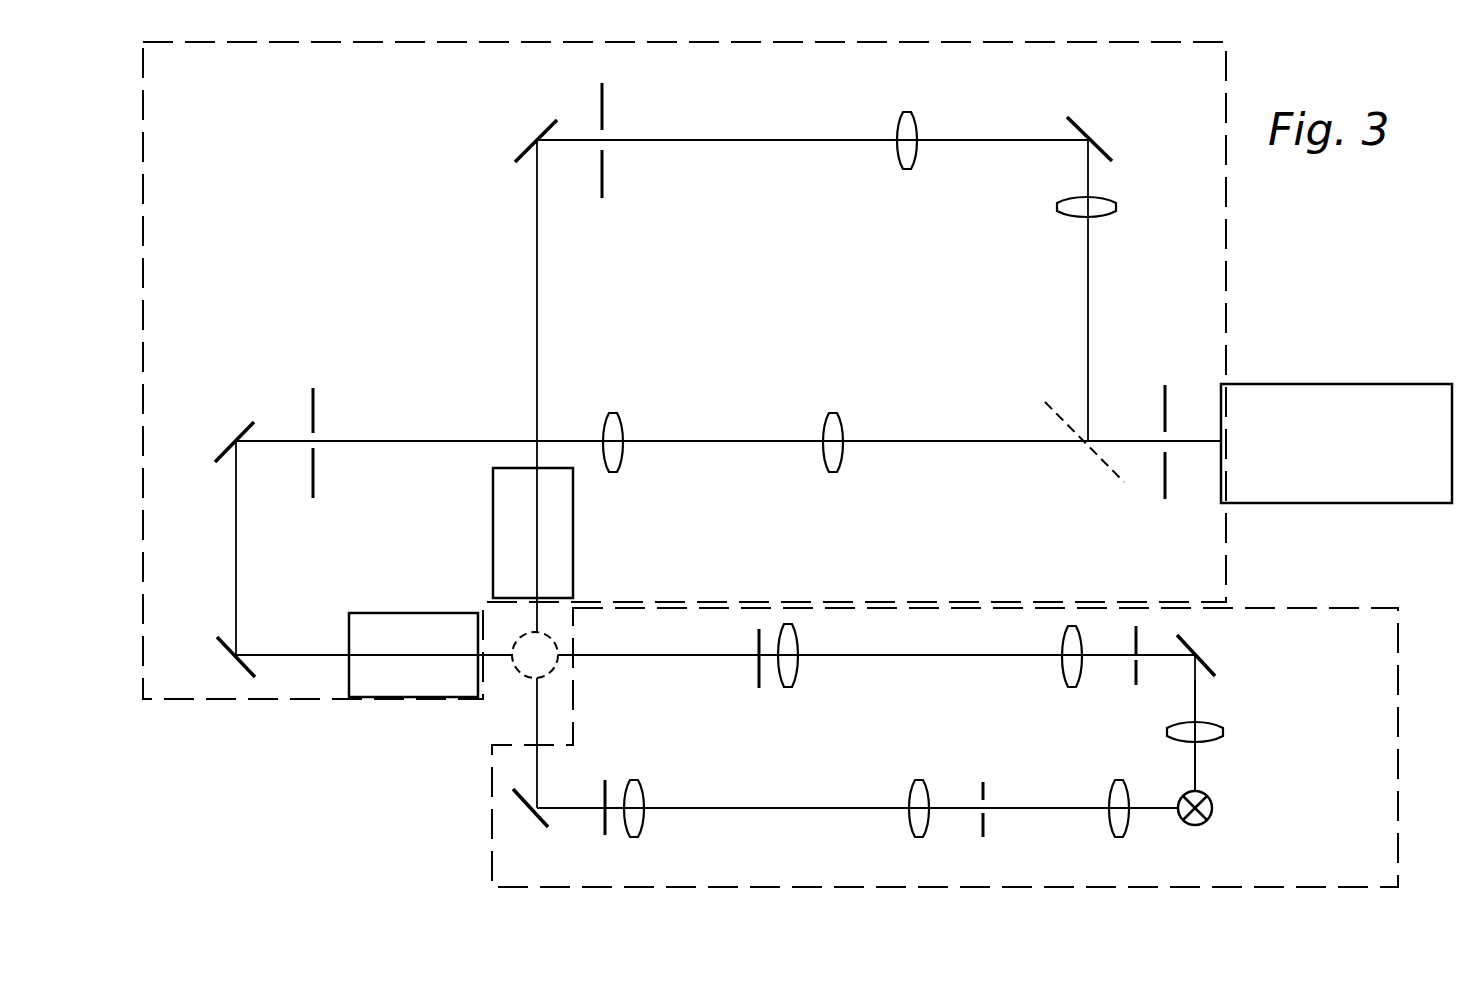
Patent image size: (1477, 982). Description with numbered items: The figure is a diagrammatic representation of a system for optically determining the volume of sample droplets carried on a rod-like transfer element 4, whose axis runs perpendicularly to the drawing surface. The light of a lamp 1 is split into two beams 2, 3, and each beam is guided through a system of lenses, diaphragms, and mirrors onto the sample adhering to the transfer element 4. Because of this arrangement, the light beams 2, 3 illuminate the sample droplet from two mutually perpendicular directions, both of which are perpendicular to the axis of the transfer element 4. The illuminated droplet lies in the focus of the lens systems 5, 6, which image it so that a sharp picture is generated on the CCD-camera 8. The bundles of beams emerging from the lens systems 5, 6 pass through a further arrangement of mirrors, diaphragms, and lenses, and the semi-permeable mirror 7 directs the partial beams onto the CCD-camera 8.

The lamp 1 is at (1210, 812).
The light beam 2 is at (1053, 810).
The light beam 3 is at (1197, 703).
The transfer element 4 is at (518, 675).
The lens system 5 is at (407, 620).
The lens system 6 is at (500, 515).
The semi-permeable mirror 7 is at (1112, 470).
The CCD-camera 8 is at (1302, 468).